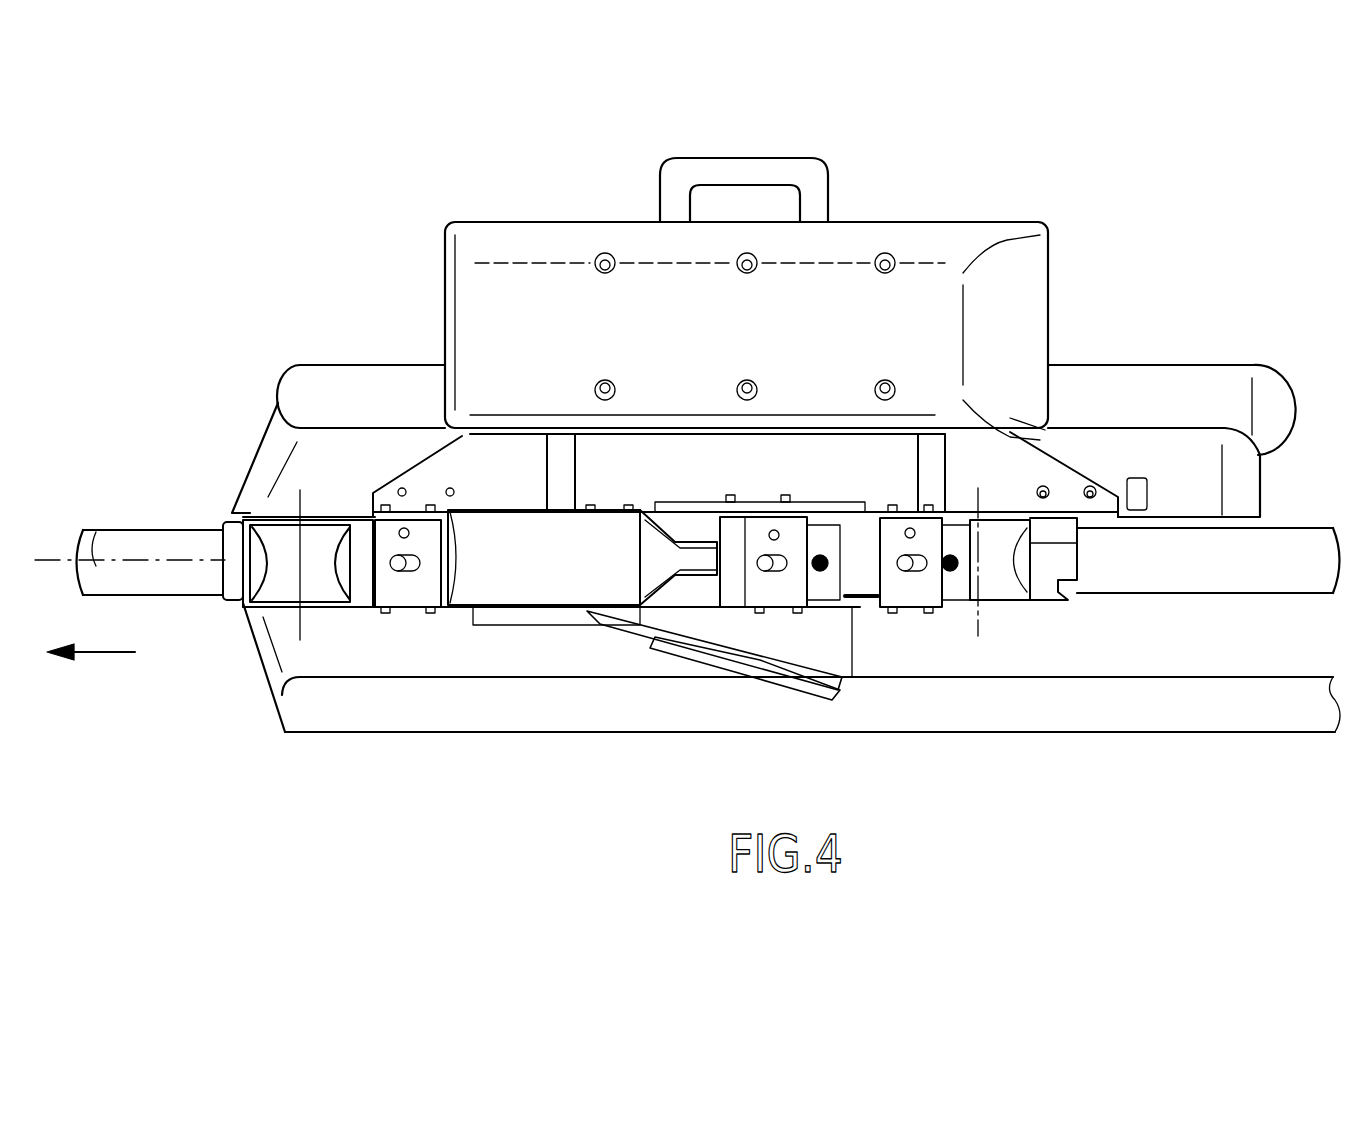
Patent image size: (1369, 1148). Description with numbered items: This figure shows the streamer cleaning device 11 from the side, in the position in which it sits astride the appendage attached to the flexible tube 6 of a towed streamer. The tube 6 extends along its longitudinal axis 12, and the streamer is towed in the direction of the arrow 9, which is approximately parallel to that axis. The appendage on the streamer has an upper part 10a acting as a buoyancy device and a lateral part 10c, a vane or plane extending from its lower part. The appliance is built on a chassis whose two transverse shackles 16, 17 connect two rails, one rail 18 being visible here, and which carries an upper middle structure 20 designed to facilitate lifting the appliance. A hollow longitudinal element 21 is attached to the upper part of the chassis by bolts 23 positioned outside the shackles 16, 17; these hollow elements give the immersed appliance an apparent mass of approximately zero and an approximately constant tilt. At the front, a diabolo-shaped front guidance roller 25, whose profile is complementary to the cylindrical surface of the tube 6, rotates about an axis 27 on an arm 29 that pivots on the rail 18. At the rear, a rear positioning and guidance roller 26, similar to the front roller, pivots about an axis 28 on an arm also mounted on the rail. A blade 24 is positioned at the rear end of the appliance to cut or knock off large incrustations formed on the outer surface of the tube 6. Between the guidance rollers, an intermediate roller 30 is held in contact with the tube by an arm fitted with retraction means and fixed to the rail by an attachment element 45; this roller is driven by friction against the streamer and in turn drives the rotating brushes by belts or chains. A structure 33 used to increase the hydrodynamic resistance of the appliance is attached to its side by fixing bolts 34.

The flexible tube 6 is at (170, 585).
The direction of traction arrow 9 is at (110, 657).
The upper part of appendage 10a is at (358, 382).
The lateral part of appendage 10c is at (958, 727).
The streamer cleaning device 11 is at (1097, 262).
The longitudinal axis 12 is at (155, 527).
The transverse shackle 16 is at (573, 470).
The transverse shackle 17 is at (918, 470).
The rail 18 is at (992, 512).
The upper middle structure 20 is at (745, 172).
The hollow longitudinal element 21 is at (487, 338).
The bolts 23 is at (742, 275).
The blade 24 is at (1060, 600).
The front guidance roller 25 is at (310, 603).
The rear positioning and guidance roller 26 is at (1003, 588).
The axis of front roller 27 is at (300, 495).
The axis of rear roller 28 is at (978, 630).
The arm 29 is at (360, 605).
The intermediate roller 30 is at (868, 598).
The hydrodynamic resistance structure 33 is at (510, 588).
The fixing bolts 34 is at (480, 505).
The attachment element 45 is at (418, 596).